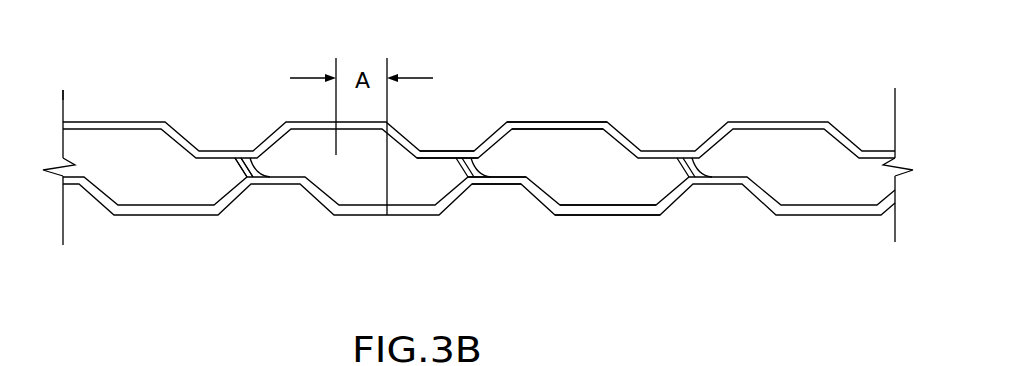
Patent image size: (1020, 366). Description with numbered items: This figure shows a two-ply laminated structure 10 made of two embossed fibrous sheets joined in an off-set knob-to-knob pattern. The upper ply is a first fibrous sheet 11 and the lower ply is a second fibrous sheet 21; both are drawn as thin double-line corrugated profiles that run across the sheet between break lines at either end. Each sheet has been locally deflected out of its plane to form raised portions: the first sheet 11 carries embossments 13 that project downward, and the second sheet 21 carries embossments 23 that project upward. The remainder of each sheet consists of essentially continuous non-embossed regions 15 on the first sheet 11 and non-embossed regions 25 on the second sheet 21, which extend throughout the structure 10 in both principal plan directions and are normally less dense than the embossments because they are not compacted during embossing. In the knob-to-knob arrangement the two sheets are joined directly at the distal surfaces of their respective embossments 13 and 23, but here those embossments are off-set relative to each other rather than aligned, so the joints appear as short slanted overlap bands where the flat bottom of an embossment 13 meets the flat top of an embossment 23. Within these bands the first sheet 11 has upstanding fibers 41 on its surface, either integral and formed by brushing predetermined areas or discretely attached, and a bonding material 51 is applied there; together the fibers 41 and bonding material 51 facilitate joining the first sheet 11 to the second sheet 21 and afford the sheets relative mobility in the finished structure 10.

The structure 10 is at (132, 74).
The first fibrous sheet 11 is at (216, 80).
The embossments of the first sheet 13 is at (437, 151).
The non-embossed regions of the first sheet 15 is at (556, 122).
The second fibrous sheet 21 is at (219, 253).
The embossments of the second sheet 23 is at (486, 184).
The non-embossed regions of the second sheet 25 is at (600, 215).
The upstanding fibers 41 is at (447, 173).
The bonding material 51 is at (226, 170).